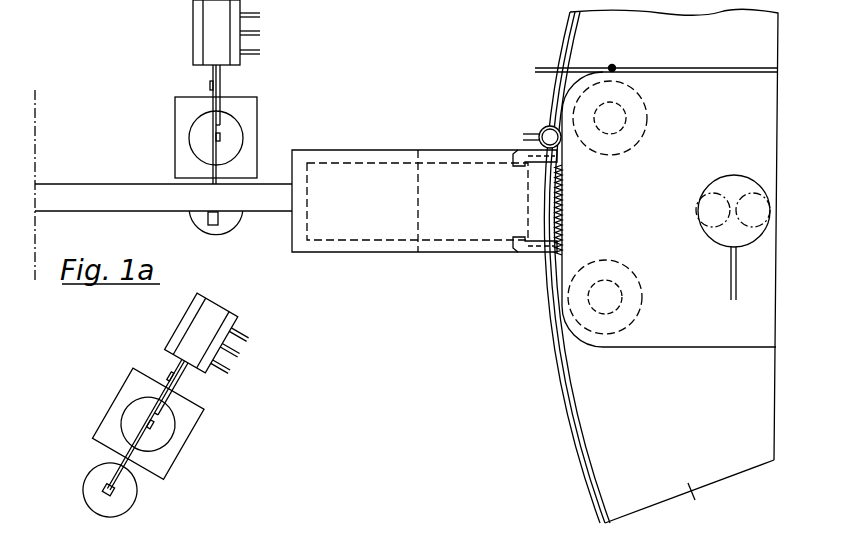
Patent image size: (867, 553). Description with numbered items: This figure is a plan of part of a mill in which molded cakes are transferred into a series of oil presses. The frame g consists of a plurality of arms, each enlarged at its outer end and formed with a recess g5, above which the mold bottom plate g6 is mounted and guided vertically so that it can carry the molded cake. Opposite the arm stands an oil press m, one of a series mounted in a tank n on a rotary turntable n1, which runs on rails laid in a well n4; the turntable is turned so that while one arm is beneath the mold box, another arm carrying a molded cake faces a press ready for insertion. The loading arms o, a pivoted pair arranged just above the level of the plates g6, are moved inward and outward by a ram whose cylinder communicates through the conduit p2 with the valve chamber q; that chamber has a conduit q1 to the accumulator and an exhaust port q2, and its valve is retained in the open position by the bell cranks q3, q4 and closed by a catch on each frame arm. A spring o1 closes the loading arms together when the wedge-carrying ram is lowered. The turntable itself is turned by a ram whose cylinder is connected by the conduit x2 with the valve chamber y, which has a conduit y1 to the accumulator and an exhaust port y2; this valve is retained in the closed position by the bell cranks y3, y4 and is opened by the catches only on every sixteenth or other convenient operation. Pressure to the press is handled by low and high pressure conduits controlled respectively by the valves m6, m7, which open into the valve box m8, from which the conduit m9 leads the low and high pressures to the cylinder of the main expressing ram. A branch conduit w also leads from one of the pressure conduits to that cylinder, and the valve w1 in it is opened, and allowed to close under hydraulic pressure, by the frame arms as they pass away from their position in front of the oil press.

The frame g is at (89, 190).
The recess g5 is at (360, 163).
The mold bottom plate g6 is at (295, 200).
The valve chamber y is at (216, 112).
The conduit y1 is at (250, 15).
The exhaust port y2 is at (250, 33).
The conduit x2 is at (250, 52).
The bell crank y3 is at (216, 138).
The bell crank y4 is at (216, 137).
The valve chamber q is at (163, 399).
The conduit q1 is at (238, 334).
The exhaust port q2 is at (229, 350).
The conduit p2 is at (220, 366).
The bell crank q3 is at (148, 423).
The bell crank q4 is at (110, 490).
The loading arms o is at (520, 157).
The spring o1 is at (557, 203).
The branch conduit w is at (643, 67).
The valve w1 is at (543, 65).
The oil press m is at (693, 338).
The valve m6 is at (745, 193).
The valve m7 is at (697, 212).
The valve box m8 is at (713, 233).
The conduit m9 is at (728, 285).
The tank n is at (580, 423).
The rotary turntable n1 is at (705, 502).
The well n4 is at (582, 467).